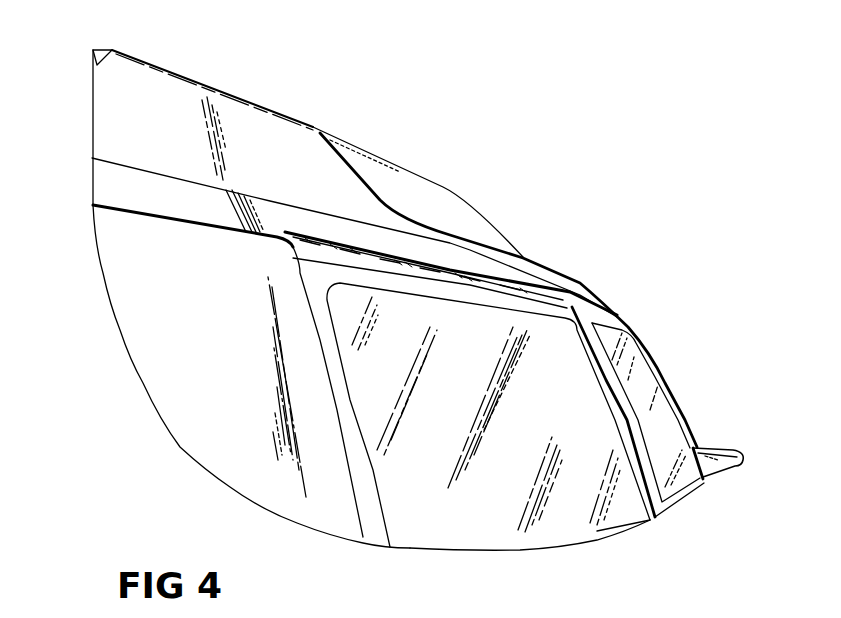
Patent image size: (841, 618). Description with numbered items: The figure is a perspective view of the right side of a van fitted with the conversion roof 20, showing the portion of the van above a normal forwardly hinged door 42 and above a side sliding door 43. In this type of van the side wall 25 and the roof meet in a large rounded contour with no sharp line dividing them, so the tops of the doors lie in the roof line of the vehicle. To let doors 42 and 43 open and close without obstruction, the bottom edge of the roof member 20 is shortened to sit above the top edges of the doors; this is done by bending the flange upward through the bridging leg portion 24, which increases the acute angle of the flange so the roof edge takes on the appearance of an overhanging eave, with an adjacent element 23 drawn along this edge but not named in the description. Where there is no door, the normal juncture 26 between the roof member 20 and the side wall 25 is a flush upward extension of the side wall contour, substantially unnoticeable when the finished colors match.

The conversion roof 20 is at (232, 104).
The drip rail molding 23 is at (317, 237).
The bridging leg portion 24 is at (357, 237).
The side wall 25 is at (122, 323).
The juncture 26 is at (172, 222).
The forwardly hinged door 42 is at (672, 428).
The side sliding door 43 is at (545, 540).